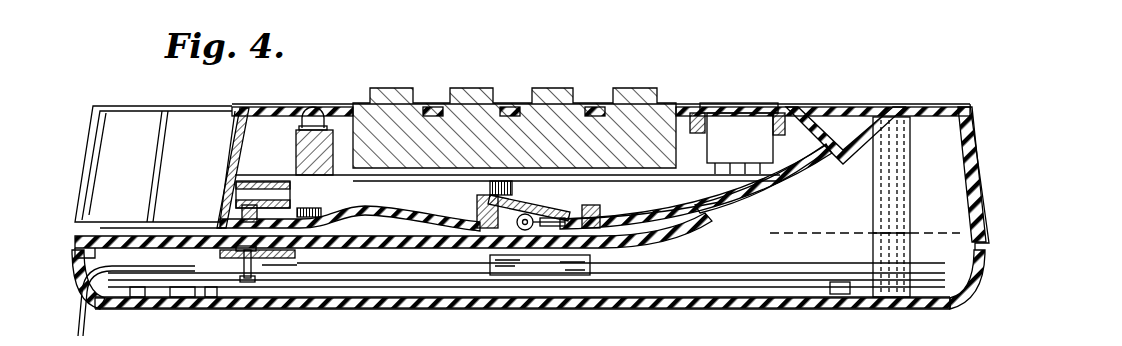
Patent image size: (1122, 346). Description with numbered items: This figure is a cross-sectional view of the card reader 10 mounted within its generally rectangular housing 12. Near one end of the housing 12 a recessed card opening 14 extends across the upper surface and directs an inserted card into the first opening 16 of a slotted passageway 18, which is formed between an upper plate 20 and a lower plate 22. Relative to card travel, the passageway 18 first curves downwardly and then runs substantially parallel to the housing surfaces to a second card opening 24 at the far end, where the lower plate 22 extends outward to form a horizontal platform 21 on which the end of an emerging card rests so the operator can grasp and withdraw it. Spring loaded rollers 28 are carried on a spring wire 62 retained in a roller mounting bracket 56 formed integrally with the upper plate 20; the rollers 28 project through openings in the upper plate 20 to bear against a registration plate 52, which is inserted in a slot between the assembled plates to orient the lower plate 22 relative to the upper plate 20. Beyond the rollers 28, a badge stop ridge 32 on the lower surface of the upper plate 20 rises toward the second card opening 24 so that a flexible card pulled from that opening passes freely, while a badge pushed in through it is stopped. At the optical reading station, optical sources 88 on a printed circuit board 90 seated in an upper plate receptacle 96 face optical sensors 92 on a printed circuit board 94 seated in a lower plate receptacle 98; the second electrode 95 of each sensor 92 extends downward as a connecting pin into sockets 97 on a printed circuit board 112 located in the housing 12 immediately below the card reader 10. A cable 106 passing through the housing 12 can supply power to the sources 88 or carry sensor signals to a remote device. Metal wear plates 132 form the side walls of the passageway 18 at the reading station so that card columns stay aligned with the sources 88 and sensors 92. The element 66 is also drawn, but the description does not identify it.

The card reader 10 is at (639, 221).
The housing 12 is at (800, 309).
The recessed card opening 14 is at (836, 107).
The first opening 16 is at (830, 163).
The slotted passageway 18 is at (663, 238).
The upper plate 20 is at (710, 210).
The horizontal platform 21 is at (122, 222).
The lower plate 22 is at (800, 203).
The second card opening 24 is at (220, 196).
The spring loaded rollers 28 is at (525, 233).
The badge stop ridge 32 is at (420, 241).
The registration plate 52 is at (566, 256).
The roller mounting bracket 56 is at (547, 189).
The spring wire 62 is at (568, 201).
The post 66 is at (490, 194).
The optical sources 88 is at (226, 200).
The printed circuit board 90 is at (272, 195).
The optical sensors 92 is at (258, 272).
The printed circuit board 94 is at (340, 288).
The second electrode 95 is at (242, 272).
The upper plate receptacle 96 is at (300, 210).
The sockets 97 is at (250, 282).
The lower plate receptacle 98 is at (300, 255).
The cable 106 is at (86, 330).
The printed circuit board 112 is at (280, 268).
The wear plates 132 is at (205, 232).